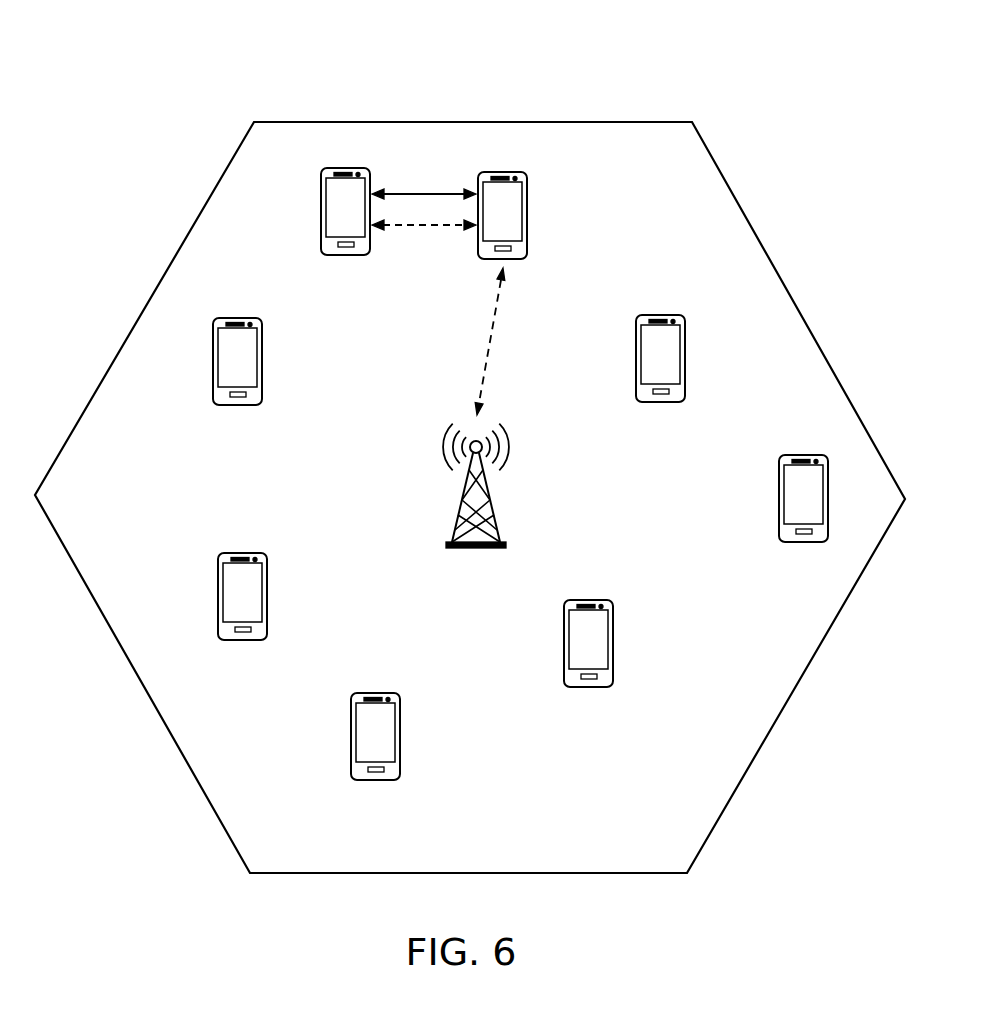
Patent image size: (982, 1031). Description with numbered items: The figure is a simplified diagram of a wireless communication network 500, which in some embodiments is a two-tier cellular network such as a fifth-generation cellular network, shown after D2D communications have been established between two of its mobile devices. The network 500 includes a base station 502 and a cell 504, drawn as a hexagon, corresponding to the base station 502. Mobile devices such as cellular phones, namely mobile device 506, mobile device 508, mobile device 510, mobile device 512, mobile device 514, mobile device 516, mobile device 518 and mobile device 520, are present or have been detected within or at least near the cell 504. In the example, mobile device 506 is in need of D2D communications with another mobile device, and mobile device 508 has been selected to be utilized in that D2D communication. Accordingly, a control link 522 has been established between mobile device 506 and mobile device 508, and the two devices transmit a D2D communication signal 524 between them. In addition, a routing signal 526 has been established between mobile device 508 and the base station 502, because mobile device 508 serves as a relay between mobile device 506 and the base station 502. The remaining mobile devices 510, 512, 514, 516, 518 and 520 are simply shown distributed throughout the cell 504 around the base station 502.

The wireless communication network 500 is at (165, 38).
The base station 502 is at (497, 498).
The cell 504 is at (472, 121).
The mobile device 506 is at (320, 212).
The mobile device 508 is at (528, 209).
The mobile device 510 is at (687, 357).
The mobile device 512 is at (778, 510).
The mobile device 514 is at (615, 640).
The mobile device 516 is at (402, 733).
The mobile device 518 is at (269, 593).
The mobile device 520 is at (264, 358).
The control link 522 is at (425, 232).
The D2D communication signal 524 is at (423, 192).
The routing signal 526 is at (488, 343).